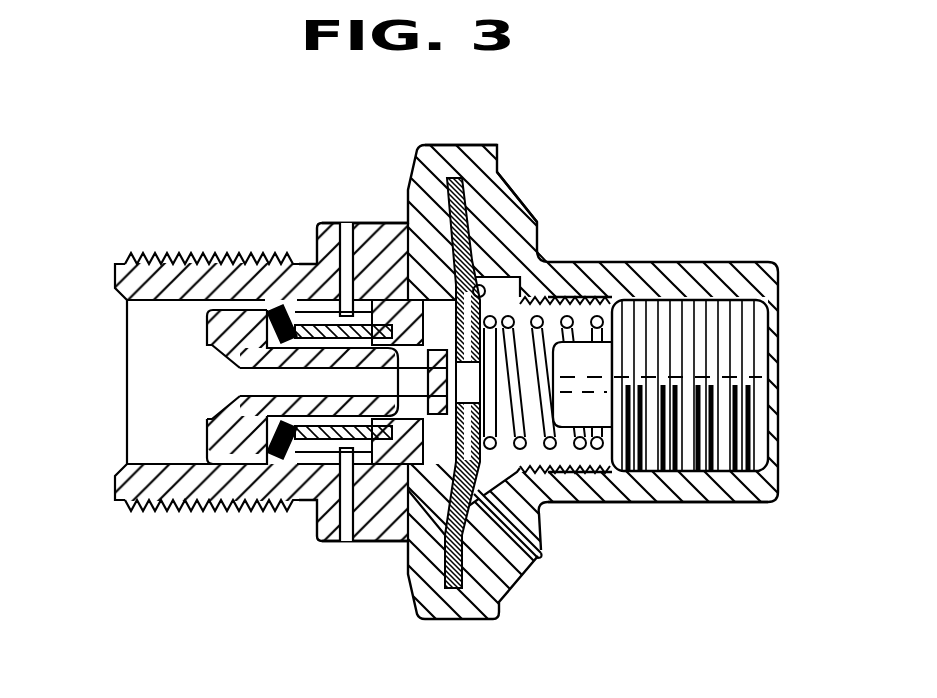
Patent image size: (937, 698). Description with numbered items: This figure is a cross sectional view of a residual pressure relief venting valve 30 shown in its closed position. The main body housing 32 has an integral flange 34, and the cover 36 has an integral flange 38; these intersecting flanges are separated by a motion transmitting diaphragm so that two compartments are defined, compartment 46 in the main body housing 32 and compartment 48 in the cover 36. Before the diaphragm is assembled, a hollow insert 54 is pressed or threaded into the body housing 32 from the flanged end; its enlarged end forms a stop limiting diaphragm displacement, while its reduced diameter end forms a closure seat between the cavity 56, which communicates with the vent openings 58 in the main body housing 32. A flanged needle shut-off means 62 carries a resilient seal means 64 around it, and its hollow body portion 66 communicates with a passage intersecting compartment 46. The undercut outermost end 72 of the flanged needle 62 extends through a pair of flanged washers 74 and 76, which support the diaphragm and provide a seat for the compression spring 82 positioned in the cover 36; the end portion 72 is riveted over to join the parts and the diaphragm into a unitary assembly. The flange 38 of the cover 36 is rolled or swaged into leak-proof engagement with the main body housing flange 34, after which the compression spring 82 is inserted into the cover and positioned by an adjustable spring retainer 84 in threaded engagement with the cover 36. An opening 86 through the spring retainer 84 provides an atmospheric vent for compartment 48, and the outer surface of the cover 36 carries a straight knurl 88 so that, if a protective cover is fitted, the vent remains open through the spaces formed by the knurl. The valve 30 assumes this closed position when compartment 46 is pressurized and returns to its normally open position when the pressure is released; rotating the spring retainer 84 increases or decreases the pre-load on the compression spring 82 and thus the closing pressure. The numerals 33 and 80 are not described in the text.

The residual pressure relief venting valve 30 is at (560, 167).
The main body housing 32 is at (466, 147).
The drain outlet 33 is at (527, 570).
The flange 34 is at (427, 577).
The cover 36 is at (745, 262).
The flange 38 is at (492, 382).
The compartment 46 is at (450, 270).
The compartment 48 is at (535, 293).
The hollow insert 54 is at (405, 305).
The cavity 56 is at (297, 510).
The vent openings 58 is at (338, 222).
The flanged needle shut-off means 62 is at (230, 350).
The resilient seal means 64 is at (282, 312).
The hollow body portion 66 is at (257, 383).
The outermost end 72 is at (610, 260).
The flanged washer 74 is at (352, 545).
The flanged washer 76 is at (543, 507).
The drain passage 80 is at (533, 513).
The compression spring 82 is at (512, 226).
The adjustable spring retainer 84 is at (727, 413).
The opening 86 is at (710, 370).
The straight knurl 88 is at (603, 513).